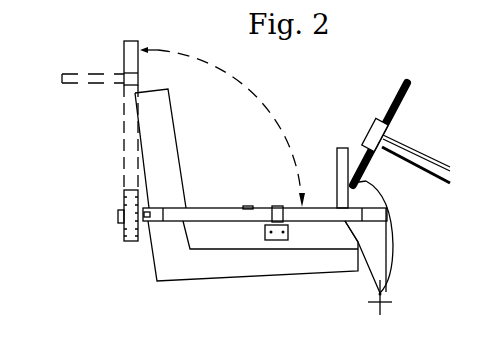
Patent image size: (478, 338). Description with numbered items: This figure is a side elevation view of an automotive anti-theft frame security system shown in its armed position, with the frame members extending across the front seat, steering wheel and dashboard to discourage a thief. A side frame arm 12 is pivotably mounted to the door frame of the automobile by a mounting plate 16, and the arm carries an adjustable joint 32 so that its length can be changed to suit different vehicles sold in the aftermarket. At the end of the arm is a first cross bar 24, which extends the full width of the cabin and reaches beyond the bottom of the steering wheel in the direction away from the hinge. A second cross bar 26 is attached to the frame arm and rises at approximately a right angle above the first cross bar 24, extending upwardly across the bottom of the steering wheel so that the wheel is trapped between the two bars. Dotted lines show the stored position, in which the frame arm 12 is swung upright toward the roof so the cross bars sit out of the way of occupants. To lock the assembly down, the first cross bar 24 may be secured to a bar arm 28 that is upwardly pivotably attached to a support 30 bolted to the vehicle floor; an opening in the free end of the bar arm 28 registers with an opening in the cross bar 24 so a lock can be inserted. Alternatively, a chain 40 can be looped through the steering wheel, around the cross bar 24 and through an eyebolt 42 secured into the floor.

The side frame arm 12 is at (215, 208).
The mounting plate 16 is at (128, 218).
The first cross bar 24 is at (373, 217).
The second cross bar 26 is at (339, 146).
The bar arm 28 is at (392, 255).
The support 30 is at (384, 302).
The adjustable joint 32 is at (255, 206).
The chain 40 is at (383, 188).
The eyebolt 42 is at (379, 297).